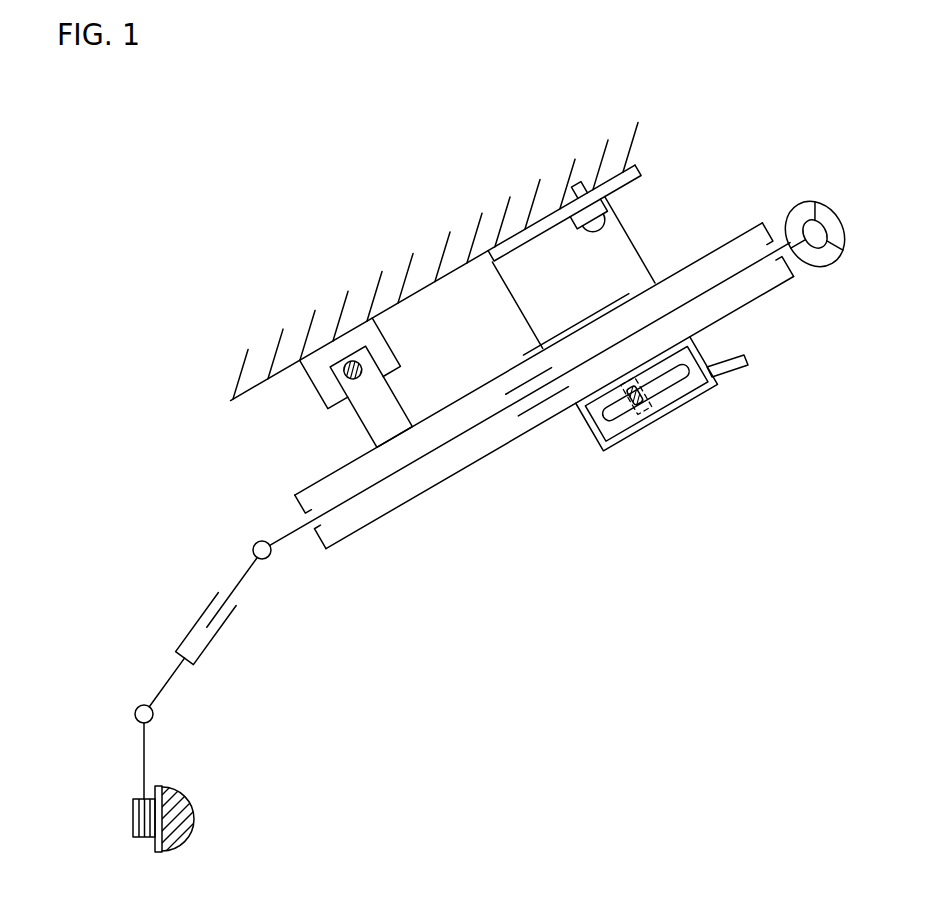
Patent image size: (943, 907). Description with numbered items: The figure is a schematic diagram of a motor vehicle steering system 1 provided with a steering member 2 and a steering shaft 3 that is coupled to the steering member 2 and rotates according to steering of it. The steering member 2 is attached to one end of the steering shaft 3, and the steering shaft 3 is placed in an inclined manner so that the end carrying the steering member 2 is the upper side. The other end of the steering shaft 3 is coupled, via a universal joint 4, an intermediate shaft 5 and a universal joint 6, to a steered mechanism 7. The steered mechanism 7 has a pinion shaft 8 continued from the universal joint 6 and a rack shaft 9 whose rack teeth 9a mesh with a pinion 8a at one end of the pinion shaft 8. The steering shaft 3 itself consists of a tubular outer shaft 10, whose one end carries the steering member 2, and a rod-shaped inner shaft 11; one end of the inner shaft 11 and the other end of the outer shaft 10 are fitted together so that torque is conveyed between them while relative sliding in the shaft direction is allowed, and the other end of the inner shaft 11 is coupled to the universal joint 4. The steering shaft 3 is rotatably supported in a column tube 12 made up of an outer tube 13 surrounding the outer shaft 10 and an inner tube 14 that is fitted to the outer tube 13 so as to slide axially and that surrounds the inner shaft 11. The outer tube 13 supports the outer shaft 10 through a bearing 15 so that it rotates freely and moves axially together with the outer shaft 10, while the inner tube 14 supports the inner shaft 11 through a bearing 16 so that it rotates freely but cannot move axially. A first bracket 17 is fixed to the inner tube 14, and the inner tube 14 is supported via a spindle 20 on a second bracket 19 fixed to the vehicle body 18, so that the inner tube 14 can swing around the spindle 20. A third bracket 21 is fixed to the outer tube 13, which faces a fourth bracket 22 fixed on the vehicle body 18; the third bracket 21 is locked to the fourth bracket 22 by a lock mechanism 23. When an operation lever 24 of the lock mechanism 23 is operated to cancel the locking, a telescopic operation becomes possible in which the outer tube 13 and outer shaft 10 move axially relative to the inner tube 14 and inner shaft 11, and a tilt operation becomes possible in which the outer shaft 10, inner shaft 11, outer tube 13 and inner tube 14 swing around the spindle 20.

The motor vehicle steering system 1 is at (776, 89).
The steering member 2 is at (832, 213).
The steering shaft 3 is at (576, 506).
The universal joint 4 is at (252, 548).
The intermediate shaft 5 is at (189, 610).
The universal joint 6 is at (136, 713).
The steered mechanism 7 is at (202, 810).
The pinion shaft 8 is at (142, 752).
The pinion 8a is at (133, 818).
The rack shaft 9 is at (152, 790).
The rack teeth 9a is at (152, 848).
The outer shaft 10 is at (540, 407).
The inner shaft 11 is at (473, 428).
The column tube 12 is at (515, 325).
The outer tube 13 is at (528, 356).
The inner tube 14 is at (455, 405).
The bearing 15 is at (771, 238).
The bearing 16 is at (303, 513).
The first bracket 17 is at (350, 415).
The vehicle body 18 is at (231, 401).
The second bracket 19 is at (302, 386).
The spindle 20 is at (348, 362).
The third bracket 21 is at (682, 390).
The fourth bracket 22 is at (717, 388).
The lock mechanism 23 is at (724, 351).
The operation lever 24 is at (738, 378).